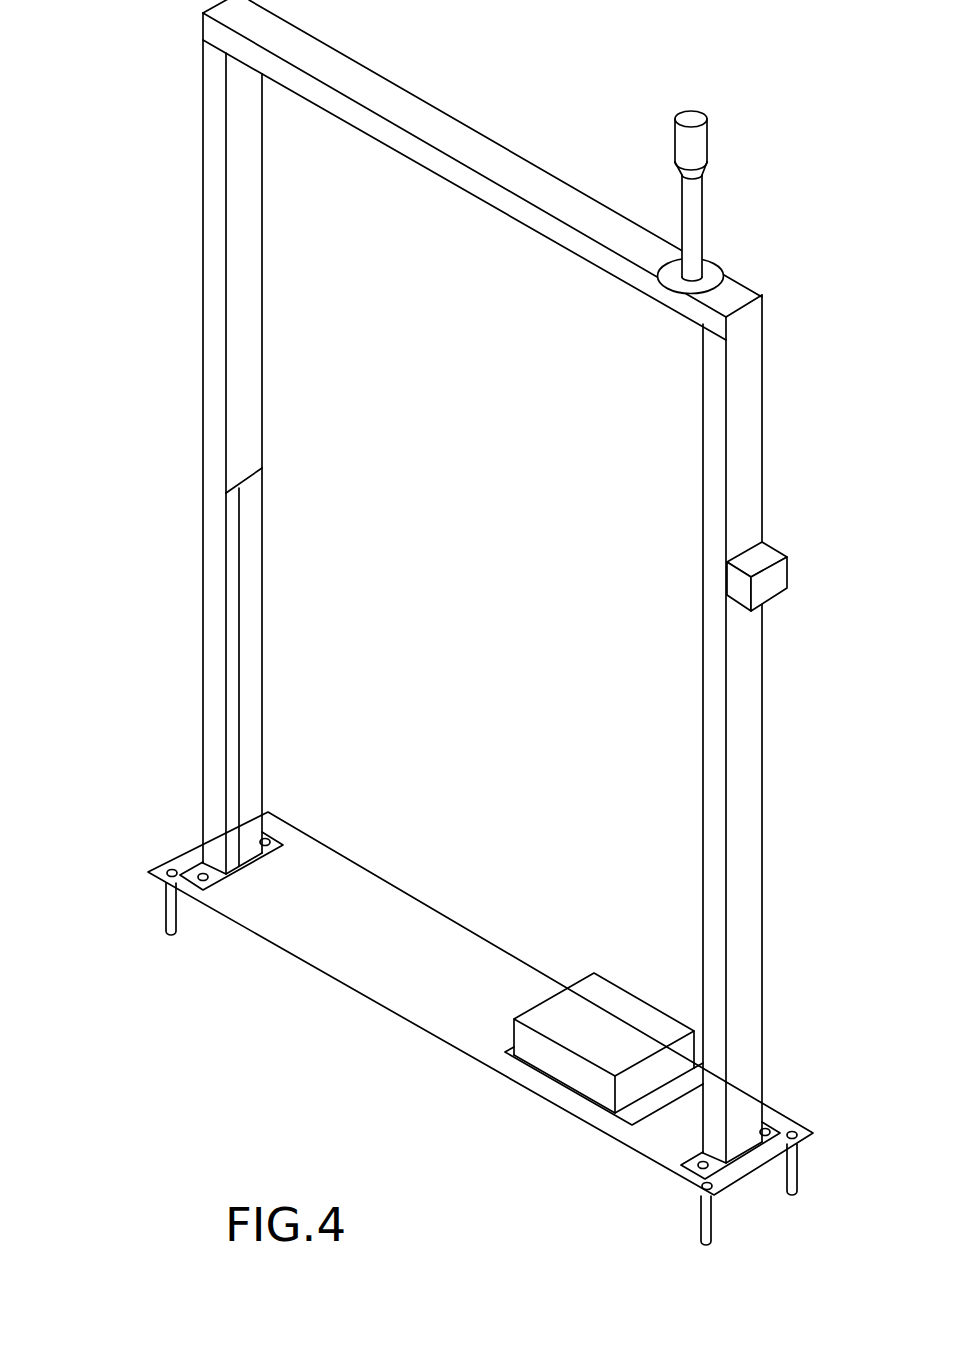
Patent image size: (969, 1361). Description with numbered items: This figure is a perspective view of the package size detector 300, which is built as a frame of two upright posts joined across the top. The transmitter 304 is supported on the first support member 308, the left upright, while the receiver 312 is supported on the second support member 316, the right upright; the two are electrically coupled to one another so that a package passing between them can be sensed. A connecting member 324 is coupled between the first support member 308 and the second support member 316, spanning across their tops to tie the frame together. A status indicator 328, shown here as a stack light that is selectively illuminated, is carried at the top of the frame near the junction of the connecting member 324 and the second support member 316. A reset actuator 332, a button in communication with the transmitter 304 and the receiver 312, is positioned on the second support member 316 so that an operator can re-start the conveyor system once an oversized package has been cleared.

The package size detector 300 is at (134, 214).
The transmitter 304 is at (238, 352).
The first support member 308 is at (203, 162).
The receiver 312 is at (715, 630).
The second support member 316 is at (748, 388).
The connecting member 324 is at (493, 140).
The status indicator 328 is at (758, 147).
The reset actuator 332 is at (824, 541).